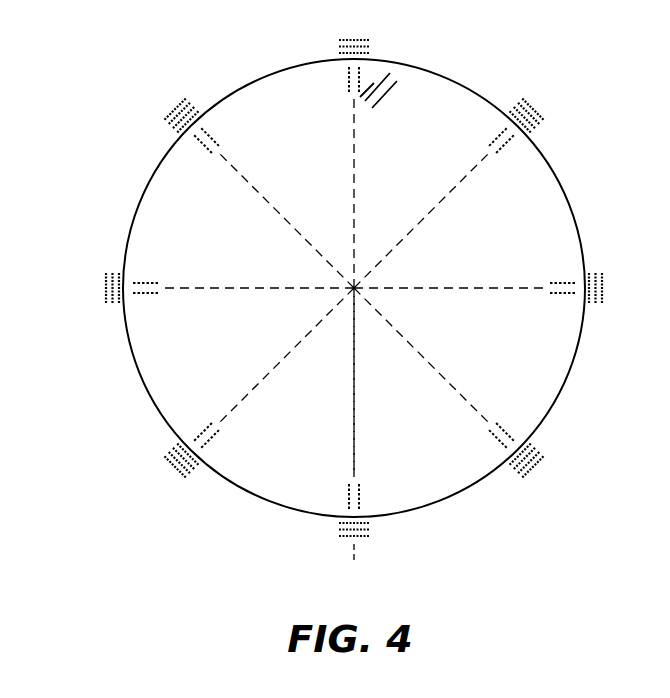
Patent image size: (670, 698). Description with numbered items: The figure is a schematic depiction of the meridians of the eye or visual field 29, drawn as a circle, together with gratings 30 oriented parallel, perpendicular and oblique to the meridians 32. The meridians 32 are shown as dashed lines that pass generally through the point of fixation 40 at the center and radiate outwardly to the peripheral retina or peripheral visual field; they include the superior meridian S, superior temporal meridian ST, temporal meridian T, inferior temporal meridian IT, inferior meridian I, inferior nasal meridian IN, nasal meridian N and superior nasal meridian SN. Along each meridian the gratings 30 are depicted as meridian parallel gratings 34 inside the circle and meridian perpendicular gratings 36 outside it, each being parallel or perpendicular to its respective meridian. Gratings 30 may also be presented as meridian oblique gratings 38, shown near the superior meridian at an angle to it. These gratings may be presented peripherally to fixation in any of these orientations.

The eye or visual field 29 is at (119, 377).
The gratings 30 is at (215, 437).
The meridians 32 is at (357, 415).
The meridian parallel gratings 34 is at (500, 447).
The meridian perpendicular gratings 36 is at (541, 455).
The meridian oblique gratings 38 is at (391, 97).
The point of fixation 40 is at (352, 286).